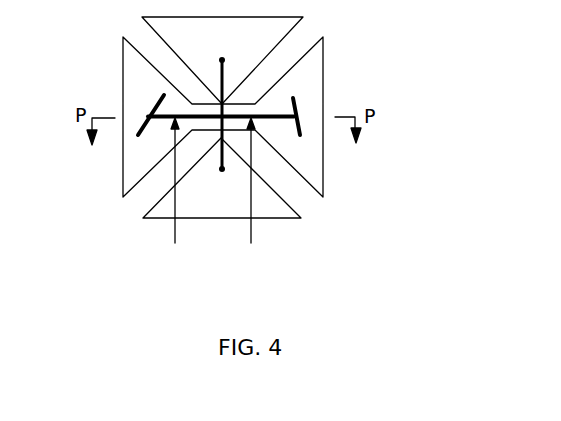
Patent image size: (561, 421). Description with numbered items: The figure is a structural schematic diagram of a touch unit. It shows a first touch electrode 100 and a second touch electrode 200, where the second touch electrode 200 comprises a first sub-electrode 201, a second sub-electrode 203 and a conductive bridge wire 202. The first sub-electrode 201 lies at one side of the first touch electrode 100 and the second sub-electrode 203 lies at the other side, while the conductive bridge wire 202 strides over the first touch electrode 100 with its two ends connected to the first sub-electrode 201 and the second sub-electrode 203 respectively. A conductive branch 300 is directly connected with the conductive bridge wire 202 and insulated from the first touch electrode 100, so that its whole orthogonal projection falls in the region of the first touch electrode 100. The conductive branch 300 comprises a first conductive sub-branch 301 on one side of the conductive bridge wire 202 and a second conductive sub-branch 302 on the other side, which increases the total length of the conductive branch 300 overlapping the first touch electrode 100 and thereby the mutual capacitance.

The first touch electrode 100 is at (135, 168).
The second touch electrode 200 is at (282, 109).
The first sub-electrode 201 is at (243, 39).
The conductive bridge wire 202 is at (224, 100).
The second sub-electrode 203 is at (265, 178).
The conductive branch 300 is at (213, 212).
The first conductive sub-branch 301 is at (171, 192).
The second conductive sub-branch 302 is at (256, 192).